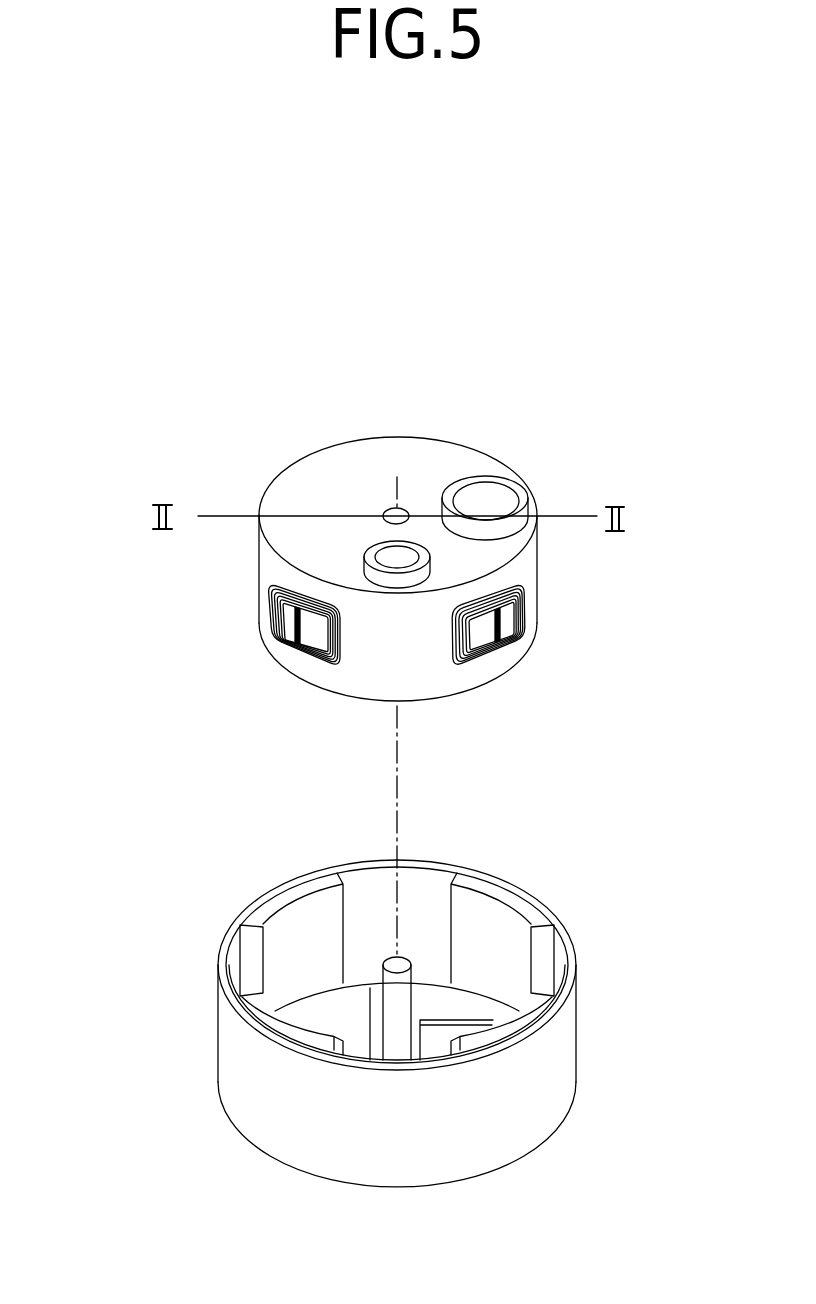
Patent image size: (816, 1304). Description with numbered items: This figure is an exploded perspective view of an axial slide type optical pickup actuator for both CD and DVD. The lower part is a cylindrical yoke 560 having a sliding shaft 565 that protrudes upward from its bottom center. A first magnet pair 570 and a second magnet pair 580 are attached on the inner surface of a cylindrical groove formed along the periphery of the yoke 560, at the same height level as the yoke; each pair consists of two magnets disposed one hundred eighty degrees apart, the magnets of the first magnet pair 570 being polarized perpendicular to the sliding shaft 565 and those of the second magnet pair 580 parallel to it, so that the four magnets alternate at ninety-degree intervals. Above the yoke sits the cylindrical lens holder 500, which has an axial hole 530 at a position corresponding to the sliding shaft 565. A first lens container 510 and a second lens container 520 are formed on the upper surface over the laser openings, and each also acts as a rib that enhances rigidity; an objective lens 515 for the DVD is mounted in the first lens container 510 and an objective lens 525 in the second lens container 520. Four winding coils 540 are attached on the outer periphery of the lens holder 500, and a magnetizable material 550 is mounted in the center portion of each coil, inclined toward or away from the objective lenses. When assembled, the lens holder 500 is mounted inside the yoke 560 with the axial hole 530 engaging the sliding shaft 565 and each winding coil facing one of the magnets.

The lens holder 500 is at (425, 452).
The first lens container 510 is at (518, 525).
The objective lens for a DVD 515 is at (488, 486).
The second lens container 520 is at (410, 585).
The objective lens 525 is at (388, 553).
The axial hole 530 is at (391, 511).
The winding coils 540 is at (272, 613).
The magnetizable material 550 is at (288, 622).
The cylindrical yoke 560 is at (562, 1041).
The sliding shaft 565 is at (392, 1007).
The first magnet pair 570 is at (287, 897).
The second magnet pair 580 is at (533, 897).